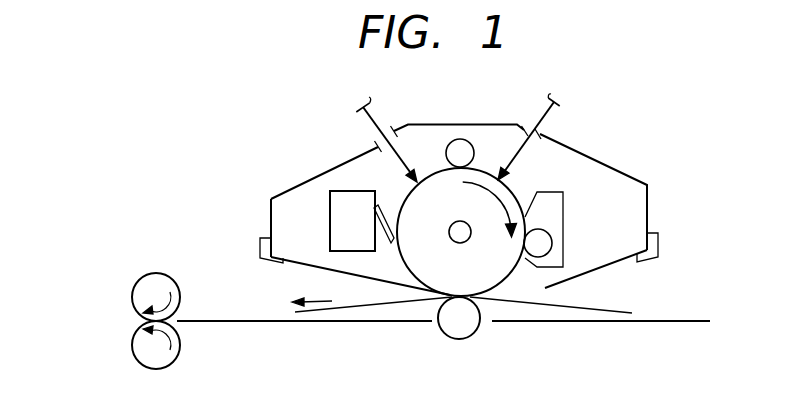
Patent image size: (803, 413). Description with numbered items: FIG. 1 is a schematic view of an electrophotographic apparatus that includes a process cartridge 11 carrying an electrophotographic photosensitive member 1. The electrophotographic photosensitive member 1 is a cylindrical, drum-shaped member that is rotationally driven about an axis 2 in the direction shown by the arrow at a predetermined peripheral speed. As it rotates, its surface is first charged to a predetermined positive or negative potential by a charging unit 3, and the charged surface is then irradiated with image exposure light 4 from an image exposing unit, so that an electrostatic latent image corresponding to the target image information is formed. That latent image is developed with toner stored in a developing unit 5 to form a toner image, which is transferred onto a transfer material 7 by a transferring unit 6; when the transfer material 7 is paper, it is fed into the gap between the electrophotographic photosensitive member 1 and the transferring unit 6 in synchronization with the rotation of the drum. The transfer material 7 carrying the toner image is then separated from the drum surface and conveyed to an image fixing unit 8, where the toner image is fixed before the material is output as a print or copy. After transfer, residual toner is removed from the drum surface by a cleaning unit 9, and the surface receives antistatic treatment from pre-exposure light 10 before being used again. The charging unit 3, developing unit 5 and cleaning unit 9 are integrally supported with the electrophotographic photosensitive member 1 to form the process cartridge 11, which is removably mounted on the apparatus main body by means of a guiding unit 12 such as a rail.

The electrophotographic photosensitive member 1 is at (408, 192).
The axis 2 is at (455, 222).
The charging unit 3 is at (461, 139).
The image exposure light 4 is at (546, 113).
The developing unit 5 is at (563, 211).
The transferring unit 6 is at (467, 338).
The transfer material 7 is at (592, 305).
The image fixing unit 8 is at (146, 277).
The cleaning unit 9 is at (336, 190).
The pre-exposure light 10 is at (375, 111).
The process cartridge 11 is at (643, 178).
The guiding unit 12 is at (258, 240).